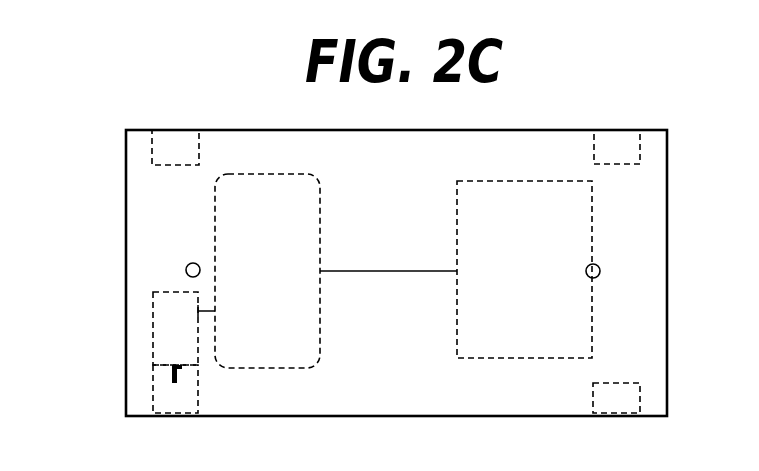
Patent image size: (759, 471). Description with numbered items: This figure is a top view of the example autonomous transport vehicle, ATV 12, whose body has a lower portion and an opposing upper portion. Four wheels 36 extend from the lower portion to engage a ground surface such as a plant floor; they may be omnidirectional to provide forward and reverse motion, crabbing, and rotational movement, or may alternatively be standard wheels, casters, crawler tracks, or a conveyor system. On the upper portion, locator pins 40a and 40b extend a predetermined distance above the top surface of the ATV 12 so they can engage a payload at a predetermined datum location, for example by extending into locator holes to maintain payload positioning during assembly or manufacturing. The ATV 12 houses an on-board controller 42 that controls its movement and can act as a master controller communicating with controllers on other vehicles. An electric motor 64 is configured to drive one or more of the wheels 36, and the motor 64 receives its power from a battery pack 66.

The ATV 12 is at (547, 103).
The wheels 36 is at (178, 131).
The locator pin 40a is at (187, 265).
The locator pin 40b is at (599, 266).
The on-board controller 42 is at (524, 269).
The electric motor 64 is at (175, 337).
The battery pack 66 is at (327, 271).